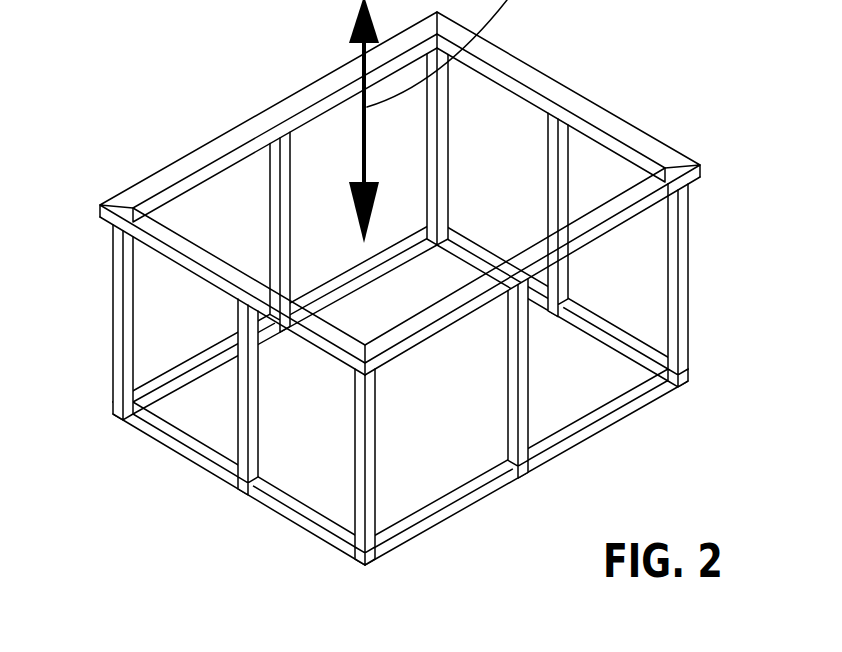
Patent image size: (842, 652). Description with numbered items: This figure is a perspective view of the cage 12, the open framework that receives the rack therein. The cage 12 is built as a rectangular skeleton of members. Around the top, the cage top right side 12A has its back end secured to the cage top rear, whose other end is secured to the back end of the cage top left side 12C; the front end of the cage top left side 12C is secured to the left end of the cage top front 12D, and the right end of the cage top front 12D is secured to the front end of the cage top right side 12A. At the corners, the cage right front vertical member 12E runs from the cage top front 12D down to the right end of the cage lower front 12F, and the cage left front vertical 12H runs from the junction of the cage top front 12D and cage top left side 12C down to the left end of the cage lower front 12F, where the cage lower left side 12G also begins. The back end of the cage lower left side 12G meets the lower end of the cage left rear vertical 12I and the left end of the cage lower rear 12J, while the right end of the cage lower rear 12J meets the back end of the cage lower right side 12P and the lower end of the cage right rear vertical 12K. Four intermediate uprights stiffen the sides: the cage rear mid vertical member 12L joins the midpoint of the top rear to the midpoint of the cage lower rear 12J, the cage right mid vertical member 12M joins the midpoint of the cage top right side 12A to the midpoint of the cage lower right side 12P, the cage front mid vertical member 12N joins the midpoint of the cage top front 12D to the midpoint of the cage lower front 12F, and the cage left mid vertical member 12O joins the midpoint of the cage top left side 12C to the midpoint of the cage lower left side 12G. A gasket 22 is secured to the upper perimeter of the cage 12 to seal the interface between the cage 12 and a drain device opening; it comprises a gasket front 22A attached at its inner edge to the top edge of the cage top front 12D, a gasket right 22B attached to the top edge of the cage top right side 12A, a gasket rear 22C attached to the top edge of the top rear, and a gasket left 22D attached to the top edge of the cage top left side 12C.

The cage 12 is at (413, 320).
The cage top right side 12A is at (538, 98).
The cage top left side 12C is at (157, 253).
The cage top front 12D is at (655, 207).
The cage right front vertical member 12E is at (678, 247).
The cage lower front 12F is at (462, 513).
The cage lower left side 12G is at (287, 520).
The cage left front vertical 12H is at (370, 502).
The cage left rear vertical 12I is at (123, 387).
The cage lower rear 12J is at (167, 397).
The cage right rear vertical 12K is at (437, 93).
The cage rear mid vertical member 12L is at (270, 188).
The cage right mid vertical member 12M is at (557, 143).
The cage front mid vertical member 12N is at (520, 402).
The cage left mid vertical member 12O is at (243, 415).
The cage lower right side 12P is at (620, 343).
The gasket 22 is at (429, 210).
The gasket front 22A is at (565, 236).
The gasket right 22B is at (647, 143).
The gasket rear 22C is at (308, 83).
The gasket left 22D is at (223, 288).